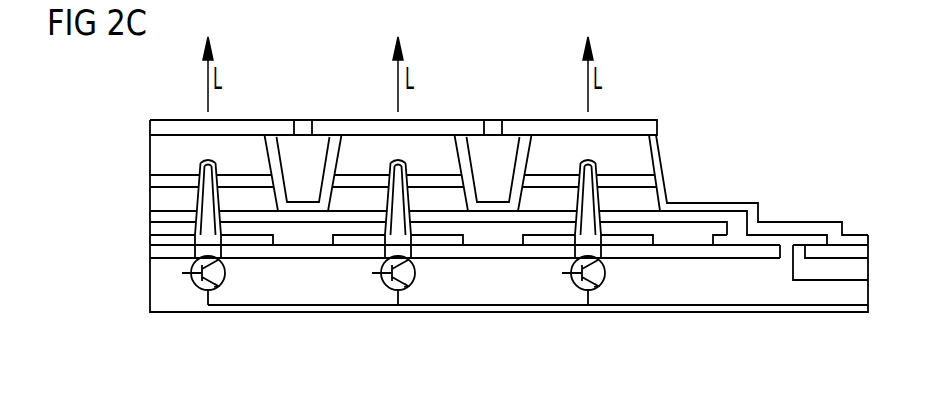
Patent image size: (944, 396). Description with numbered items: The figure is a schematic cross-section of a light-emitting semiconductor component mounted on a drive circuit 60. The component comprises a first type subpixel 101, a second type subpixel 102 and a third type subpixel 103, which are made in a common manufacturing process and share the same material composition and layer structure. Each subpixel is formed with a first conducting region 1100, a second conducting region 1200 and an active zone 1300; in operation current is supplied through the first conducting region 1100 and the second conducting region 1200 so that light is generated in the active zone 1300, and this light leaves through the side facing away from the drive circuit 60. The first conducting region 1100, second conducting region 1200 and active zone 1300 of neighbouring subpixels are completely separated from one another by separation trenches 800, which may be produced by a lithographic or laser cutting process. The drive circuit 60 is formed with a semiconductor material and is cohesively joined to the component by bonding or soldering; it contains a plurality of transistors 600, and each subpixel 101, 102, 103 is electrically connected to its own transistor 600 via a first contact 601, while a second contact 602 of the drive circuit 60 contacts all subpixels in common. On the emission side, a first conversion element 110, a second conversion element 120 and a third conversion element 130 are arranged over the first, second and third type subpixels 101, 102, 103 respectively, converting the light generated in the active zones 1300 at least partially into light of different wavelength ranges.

The drive circuit 60 is at (167, 303).
The transistor 600 is at (219, 277).
The first contact 601 is at (357, 240).
The second contact 602 is at (737, 240).
The first conversion element 110 is at (165, 130).
The second conversion element 120 is at (363, 130).
The third conversion element 130 is at (547, 130).
The separation trench 800 is at (313, 153).
The first type subpixel 101 is at (232, 182).
The second type subpixel 102 is at (432, 180).
The third type subpixel 103 is at (742, 112).
The first conducting region 1100 is at (660, 140).
The active zone 1300 is at (645, 178).
The second conducting region 1200 is at (640, 197).